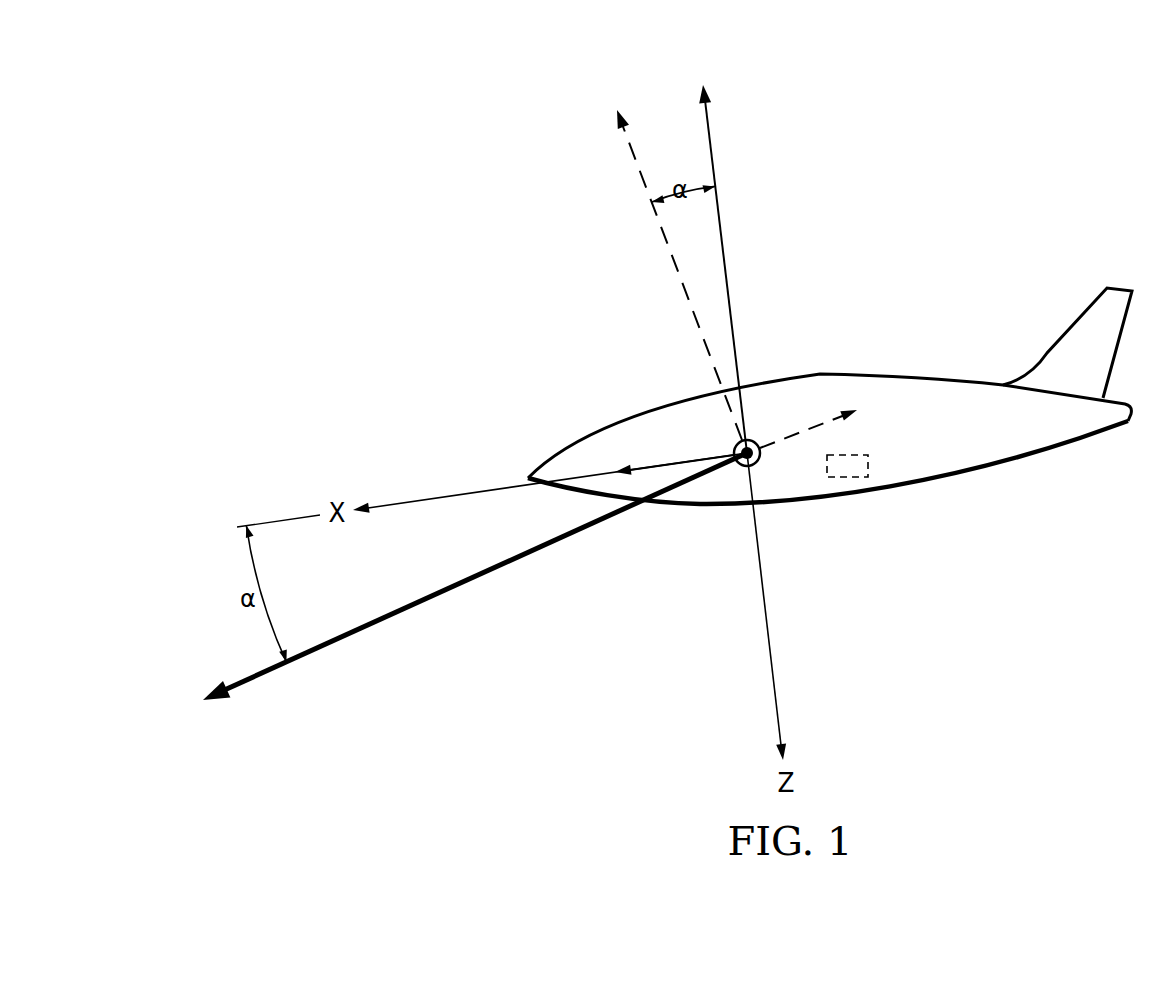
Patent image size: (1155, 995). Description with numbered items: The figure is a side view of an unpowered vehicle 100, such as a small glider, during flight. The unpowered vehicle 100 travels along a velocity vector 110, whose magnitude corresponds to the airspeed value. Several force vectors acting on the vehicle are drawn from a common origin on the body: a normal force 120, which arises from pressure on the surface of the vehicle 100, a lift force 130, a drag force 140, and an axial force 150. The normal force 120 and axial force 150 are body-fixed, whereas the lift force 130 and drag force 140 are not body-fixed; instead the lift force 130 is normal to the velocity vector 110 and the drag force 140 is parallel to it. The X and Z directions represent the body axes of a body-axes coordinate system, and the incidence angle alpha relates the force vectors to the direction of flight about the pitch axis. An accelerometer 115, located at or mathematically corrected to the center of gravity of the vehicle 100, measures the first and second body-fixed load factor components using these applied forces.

The unpowered vehicle 100 is at (924, 377).
The velocity vector 110 is at (348, 635).
The accelerometer 115 is at (857, 478).
The normal force 120 is at (713, 140).
The lift force 130 is at (632, 153).
The drag force 140 is at (787, 435).
The axial force 150 is at (668, 465).